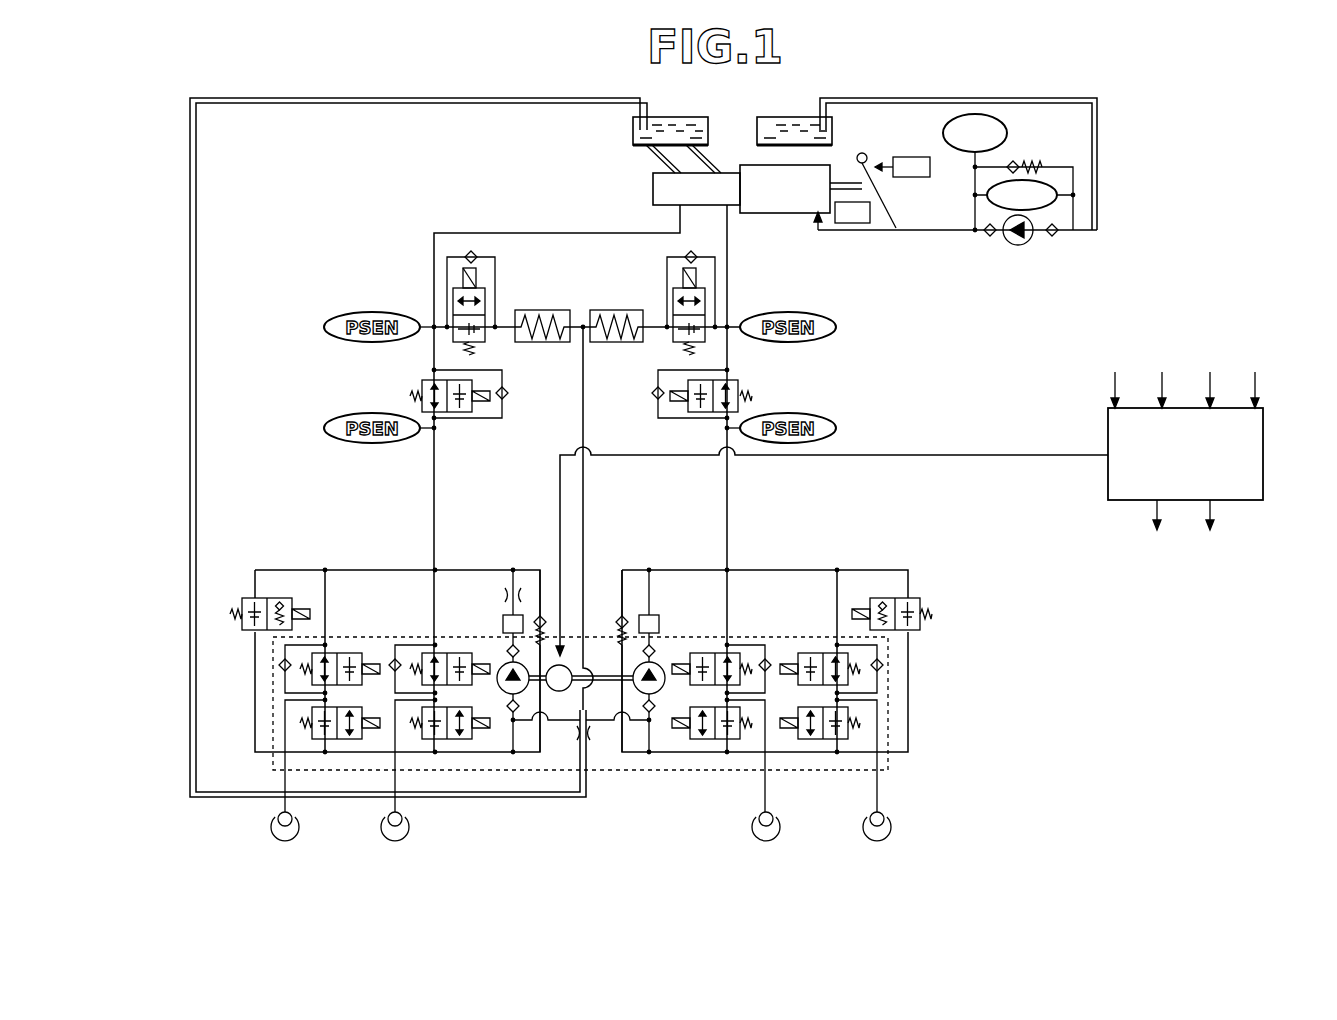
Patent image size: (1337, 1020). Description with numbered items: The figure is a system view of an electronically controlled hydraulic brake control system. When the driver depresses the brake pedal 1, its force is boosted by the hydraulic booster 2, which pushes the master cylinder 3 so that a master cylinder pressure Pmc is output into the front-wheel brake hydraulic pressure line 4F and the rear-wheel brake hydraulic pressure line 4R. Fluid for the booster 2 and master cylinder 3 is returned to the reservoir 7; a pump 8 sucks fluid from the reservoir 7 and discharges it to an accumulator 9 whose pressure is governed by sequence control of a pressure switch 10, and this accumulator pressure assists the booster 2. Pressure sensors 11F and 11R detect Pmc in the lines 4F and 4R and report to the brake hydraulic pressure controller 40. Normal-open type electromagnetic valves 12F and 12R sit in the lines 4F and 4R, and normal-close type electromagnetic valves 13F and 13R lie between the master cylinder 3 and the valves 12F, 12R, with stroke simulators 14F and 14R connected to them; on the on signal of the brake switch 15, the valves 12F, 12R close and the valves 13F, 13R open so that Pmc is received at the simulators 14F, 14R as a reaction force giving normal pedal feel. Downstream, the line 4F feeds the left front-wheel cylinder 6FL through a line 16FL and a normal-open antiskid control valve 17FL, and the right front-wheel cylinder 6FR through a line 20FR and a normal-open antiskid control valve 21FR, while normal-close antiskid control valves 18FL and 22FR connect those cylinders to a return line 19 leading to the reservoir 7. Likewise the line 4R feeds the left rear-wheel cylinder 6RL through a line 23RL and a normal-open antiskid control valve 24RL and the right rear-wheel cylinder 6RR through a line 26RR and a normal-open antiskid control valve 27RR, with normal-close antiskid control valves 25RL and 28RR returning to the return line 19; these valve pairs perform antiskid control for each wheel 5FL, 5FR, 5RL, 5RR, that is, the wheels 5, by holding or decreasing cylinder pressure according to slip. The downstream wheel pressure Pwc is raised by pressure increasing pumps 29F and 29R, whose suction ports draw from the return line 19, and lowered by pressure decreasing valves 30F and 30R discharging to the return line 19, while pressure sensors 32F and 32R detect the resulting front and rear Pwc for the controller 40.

The brake pedal 1 is at (892, 196).
The hydraulic booster 2 is at (800, 222).
The master cylinder 3 is at (653, 189).
The rear-wheel brake hydraulic pressure line 4R is at (533, 233).
The front-wheel brake hydraulic pressure line 4F is at (727, 262).
The hydraulic pressure source 5 is at (1052, 153).
The reservoir 7 is at (757, 120).
The pump 8 is at (1018, 245).
The accumulator 9 is at (1007, 133).
The pressure switch 10 is at (1097, 196).
The pressure sensor 11R is at (352, 313).
The pressure sensor 11F is at (836, 322).
The normal-open type electromagnetic valve 12R is at (420, 389).
The normal-open type electromagnetic valve 12F is at (740, 386).
The normal-close type electromagnetic valve 13R is at (453, 297).
The normal-close type electromagnetic valve 13F is at (705, 300).
The stroke simulator 14R is at (540, 310).
The stroke simulator 14F is at (612, 310).
The brake switch 15 is at (866, 224).
The line 16FL is at (835, 590).
The normal-open antiskid control valve 17FL is at (815, 655).
The normal-close antiskid control valve 18FL is at (818, 742).
The return line 19 is at (575, 797).
The line 20FR is at (730, 590).
The normal-open antiskid control valve 21FR is at (712, 655).
The normal-close antiskid control valve 22FR is at (730, 740).
The line 23RL is at (437, 580).
The normal-open antiskid control valve 24RL is at (445, 655).
The normal-close antiskid control valve 25RL is at (455, 742).
The line 26RR is at (325, 585).
The normal-open antiskid control valve 27RR is at (340, 655).
The normal-close antiskid control valve 28RR is at (345, 745).
The pressure increasing pump 29R is at (518, 612).
The pressure increasing pump 29F is at (618, 612).
The pressure decreasing valve 30R is at (285, 598).
The pressure decreasing valve 30F is at (905, 600).
The pressure sensor 32R is at (345, 418).
The pressure sensor 32F is at (810, 414).
The brake hydraulic pressure controller 40 is at (1263, 455).
The wheel 5RR is at (278, 818).
The wheel 5RL is at (397, 834).
The wheel 5FR is at (752, 825).
The wheel 5FL is at (865, 835).
The right rear-wheel cylinder 6RR is at (291, 834).
The left rear-wheel cylinder 6RL is at (402, 819).
The right front-wheel cylinder 6FR is at (768, 835).
The left front-wheel cylinder 6FL is at (885, 818).